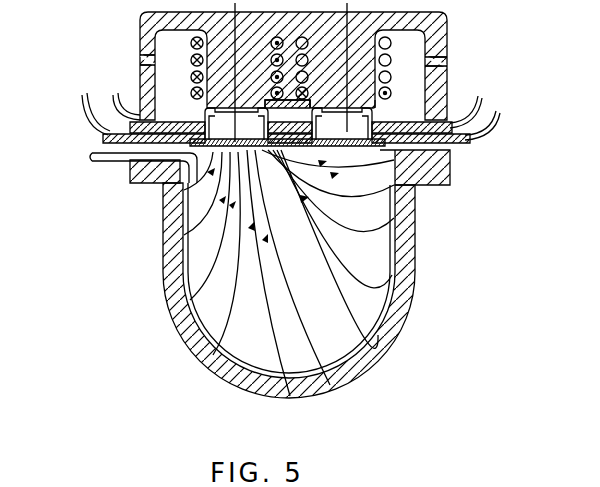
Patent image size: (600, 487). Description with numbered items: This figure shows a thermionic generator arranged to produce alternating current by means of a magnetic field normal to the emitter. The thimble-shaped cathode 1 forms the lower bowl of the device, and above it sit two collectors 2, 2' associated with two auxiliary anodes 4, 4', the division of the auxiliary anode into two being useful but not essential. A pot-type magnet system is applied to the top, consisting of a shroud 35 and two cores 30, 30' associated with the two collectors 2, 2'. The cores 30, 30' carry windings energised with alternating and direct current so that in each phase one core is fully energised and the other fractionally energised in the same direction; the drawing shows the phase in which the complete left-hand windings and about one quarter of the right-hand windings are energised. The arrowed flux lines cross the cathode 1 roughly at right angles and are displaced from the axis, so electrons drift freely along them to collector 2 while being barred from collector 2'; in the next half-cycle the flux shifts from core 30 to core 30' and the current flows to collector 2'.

The shroud 35 is at (138, 20).
The core 30 is at (187, 80).
The core 30' is at (390, 82).
The auxiliary anode 4 is at (289, 81).
The auxiliary anode 4' is at (342, 119).
The collector 2 is at (236, 124).
The collector 2' is at (342, 124).
The thimble-shaped cathode 1 is at (212, 331).